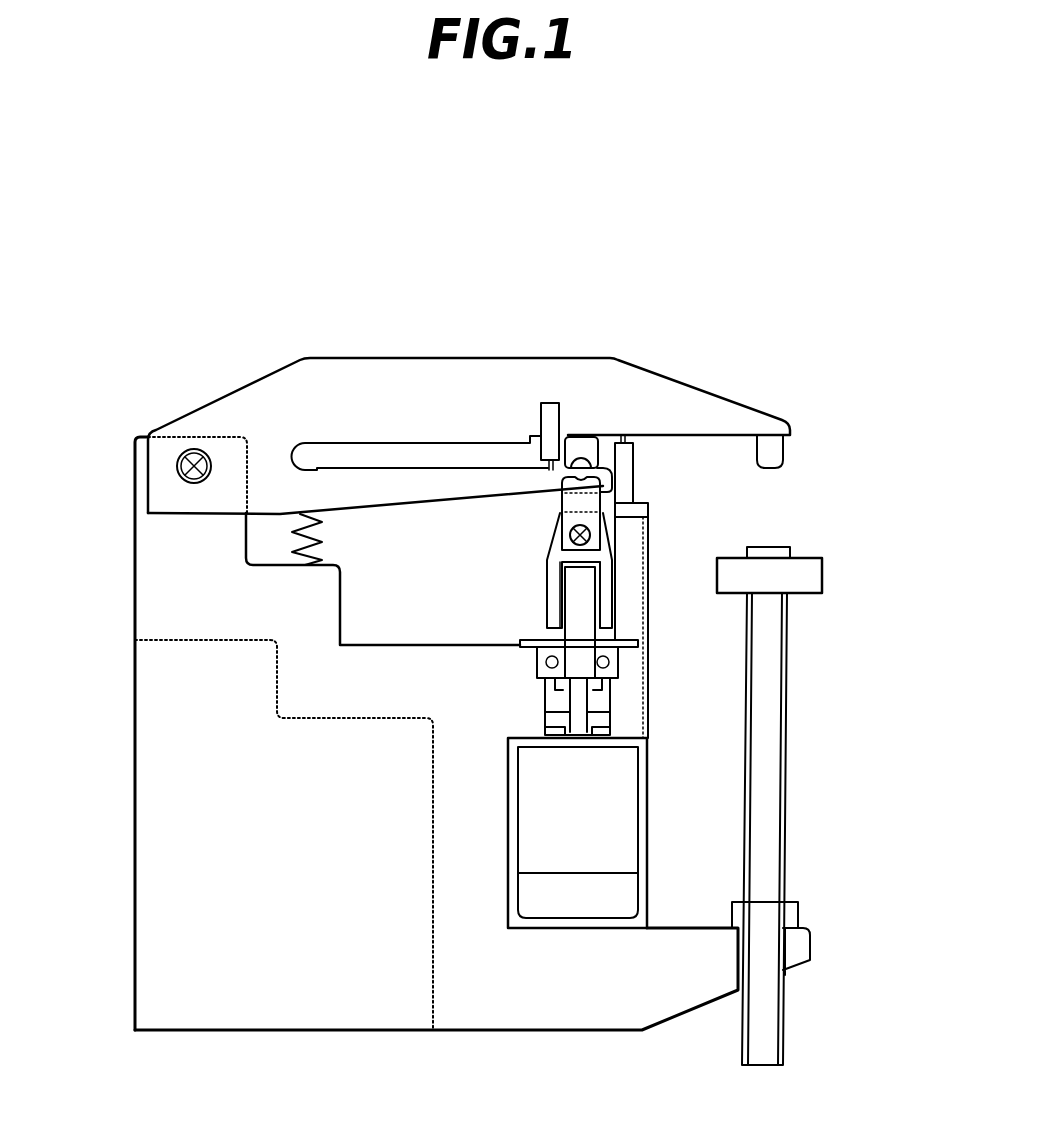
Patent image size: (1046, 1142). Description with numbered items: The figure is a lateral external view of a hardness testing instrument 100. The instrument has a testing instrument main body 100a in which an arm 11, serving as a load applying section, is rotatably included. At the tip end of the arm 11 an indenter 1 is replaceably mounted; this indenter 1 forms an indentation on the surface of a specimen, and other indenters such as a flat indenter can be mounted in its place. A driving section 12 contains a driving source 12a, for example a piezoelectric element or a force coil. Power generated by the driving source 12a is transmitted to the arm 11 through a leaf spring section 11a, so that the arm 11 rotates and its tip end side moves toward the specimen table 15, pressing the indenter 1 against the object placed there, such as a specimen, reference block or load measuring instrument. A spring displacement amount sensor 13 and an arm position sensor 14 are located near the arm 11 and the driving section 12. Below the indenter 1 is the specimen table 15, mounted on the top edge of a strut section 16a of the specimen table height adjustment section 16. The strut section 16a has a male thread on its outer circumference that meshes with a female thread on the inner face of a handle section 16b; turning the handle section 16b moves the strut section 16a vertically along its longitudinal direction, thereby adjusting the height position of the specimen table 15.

The hardness testing instrument 100 is at (537, 226).
The testing instrument main body 100a is at (160, 553).
The arm 11 is at (638, 390).
The leaf spring section 11a is at (417, 500).
The spring displacement amount sensor 13 is at (552, 403).
The arm position sensor 14 is at (625, 467).
The indenter 1 is at (773, 470).
The driving section 12 is at (578, 623).
The driving source 12a is at (617, 823).
The specimen table 15 is at (822, 580).
The specimen table height adjustment section 16 is at (885, 828).
The strut section 16a is at (770, 858).
The handle section 16b is at (792, 917).